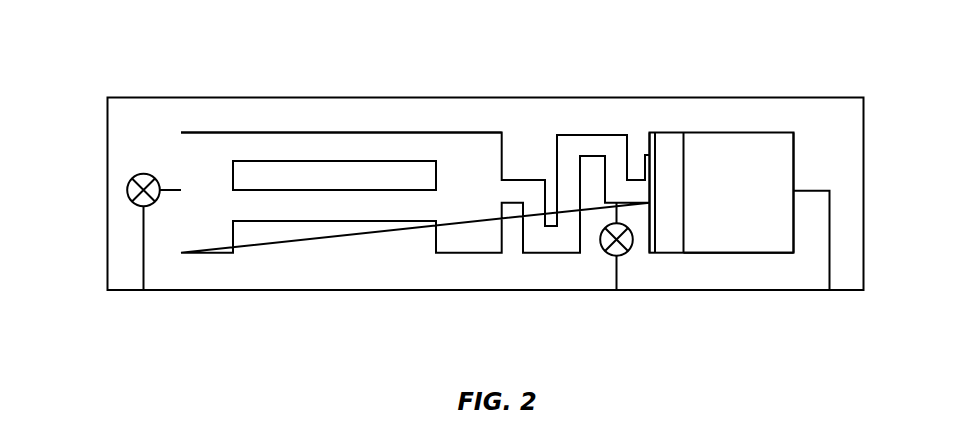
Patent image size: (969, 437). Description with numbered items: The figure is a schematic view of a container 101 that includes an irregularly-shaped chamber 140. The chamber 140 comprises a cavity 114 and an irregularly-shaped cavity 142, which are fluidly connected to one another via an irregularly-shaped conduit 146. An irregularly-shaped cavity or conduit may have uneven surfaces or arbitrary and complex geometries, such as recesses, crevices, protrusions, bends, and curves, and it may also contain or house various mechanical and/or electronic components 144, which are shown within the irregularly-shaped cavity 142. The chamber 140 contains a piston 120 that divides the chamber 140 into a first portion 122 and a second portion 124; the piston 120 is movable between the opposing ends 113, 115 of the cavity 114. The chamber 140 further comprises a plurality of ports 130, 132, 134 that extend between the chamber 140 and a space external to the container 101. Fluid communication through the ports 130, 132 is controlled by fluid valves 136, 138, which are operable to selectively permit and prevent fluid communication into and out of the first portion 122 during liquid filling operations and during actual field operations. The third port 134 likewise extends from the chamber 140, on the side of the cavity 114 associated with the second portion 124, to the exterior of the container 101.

The container 101 is at (148, 63).
The end of cavity 113 is at (638, 156).
The cavity 114 is at (726, 132).
The end of cavity 115 is at (795, 159).
The piston 120 is at (665, 156).
The first portion 122 is at (330, 203).
The second portion 124 is at (733, 228).
The port 130 is at (144, 272).
The port 132 is at (617, 275).
The port 134 is at (830, 265).
The fluid valve 136 is at (127, 190).
The fluid valve 138 is at (592, 244).
The irregularly-shaped chamber 140 is at (434, 129).
The irregularly-shaped cavity 142 is at (337, 130).
The mechanical and/or electronic components 144 is at (272, 171).
The irregularly-shaped conduit 146 is at (572, 135).